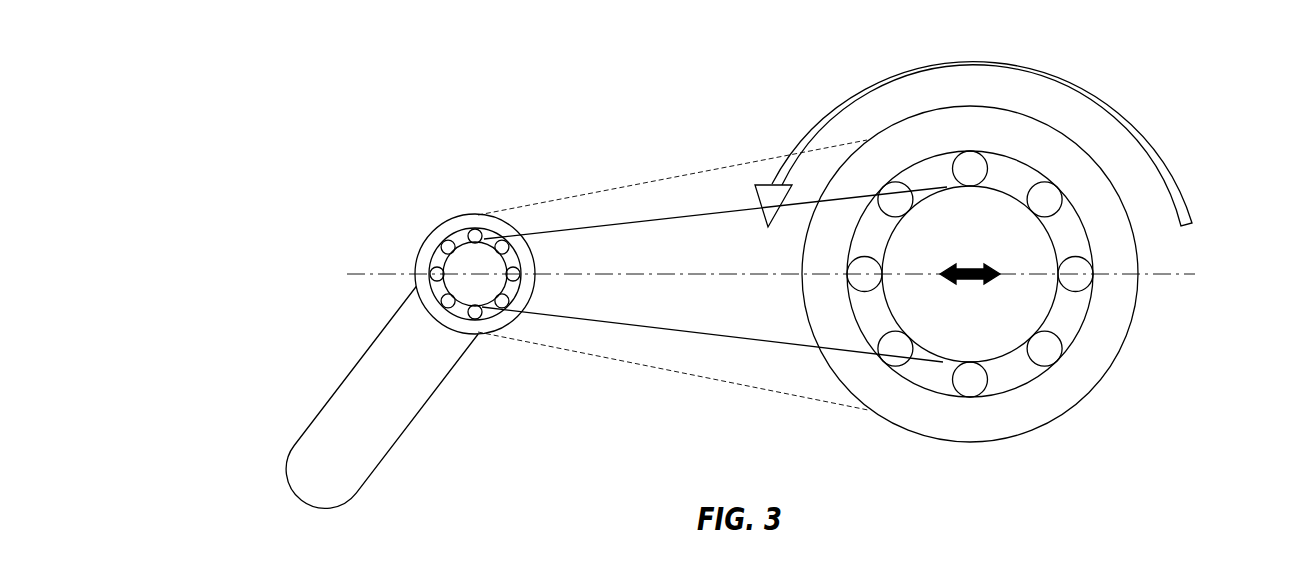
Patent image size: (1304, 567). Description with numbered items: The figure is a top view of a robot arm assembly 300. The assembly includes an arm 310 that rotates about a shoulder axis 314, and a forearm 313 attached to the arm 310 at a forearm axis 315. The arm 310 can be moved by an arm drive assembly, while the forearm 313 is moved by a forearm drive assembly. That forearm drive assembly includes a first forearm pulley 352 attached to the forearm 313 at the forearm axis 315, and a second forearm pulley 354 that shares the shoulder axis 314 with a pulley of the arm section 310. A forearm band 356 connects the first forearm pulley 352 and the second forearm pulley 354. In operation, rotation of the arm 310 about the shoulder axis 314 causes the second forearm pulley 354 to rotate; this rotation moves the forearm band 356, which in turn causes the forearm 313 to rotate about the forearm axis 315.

The robot arm assembly 300 is at (1165, 82).
The arm 310 is at (583, 353).
The forearm 313 is at (354, 362).
The shoulder axis 314 is at (977, 282).
The forearm axis 315 is at (472, 270).
The first forearm pulley 352 is at (485, 225).
The second forearm pulley 354 is at (1019, 160).
The forearm band 356 is at (682, 332).